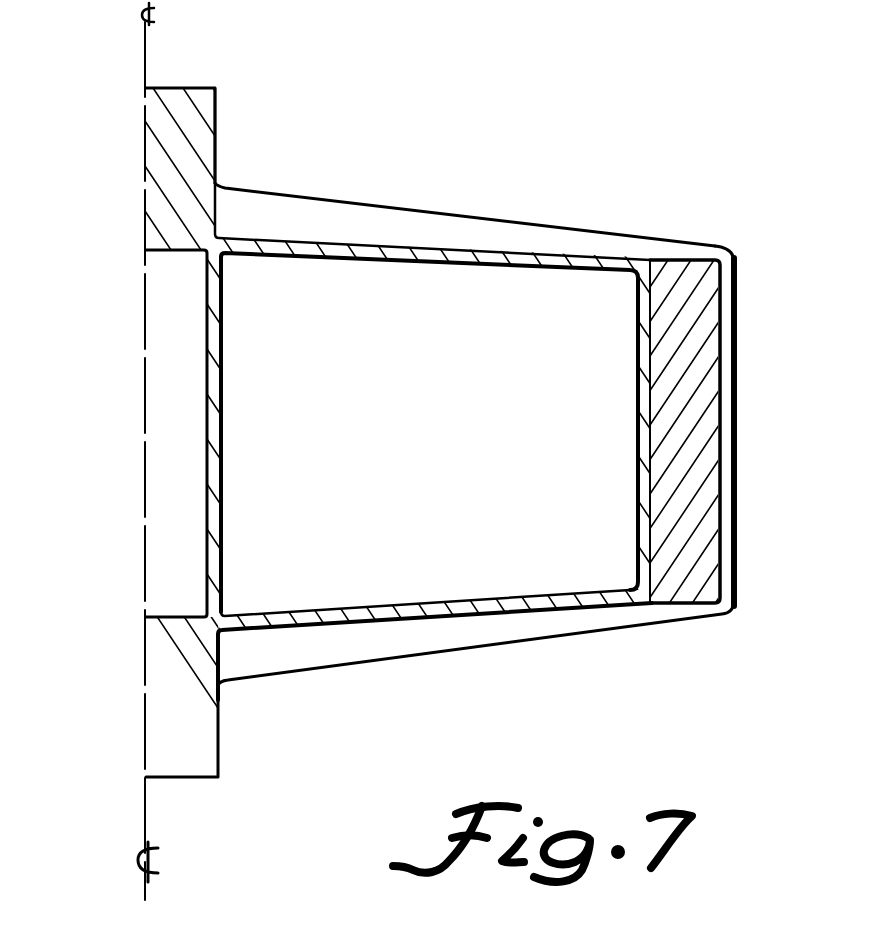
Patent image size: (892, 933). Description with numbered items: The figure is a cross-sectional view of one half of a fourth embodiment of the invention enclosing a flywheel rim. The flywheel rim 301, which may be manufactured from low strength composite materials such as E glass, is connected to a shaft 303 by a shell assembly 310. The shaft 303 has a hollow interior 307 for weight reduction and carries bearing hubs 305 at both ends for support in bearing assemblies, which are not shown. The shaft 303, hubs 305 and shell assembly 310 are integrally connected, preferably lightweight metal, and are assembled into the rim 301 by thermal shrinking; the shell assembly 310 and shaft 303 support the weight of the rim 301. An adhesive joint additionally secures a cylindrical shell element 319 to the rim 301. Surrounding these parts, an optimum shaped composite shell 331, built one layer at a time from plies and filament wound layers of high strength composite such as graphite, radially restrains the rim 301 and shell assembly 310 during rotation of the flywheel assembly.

The flywheel rim 301 is at (718, 412).
The shaft 303 is at (160, 215).
The bearing hubs 305 is at (170, 88).
The hollow interior 307 is at (202, 437).
The shell assembly 310 is at (512, 290).
The cylindrical shell element 319 is at (637, 478).
The composite shell 331 is at (622, 236).